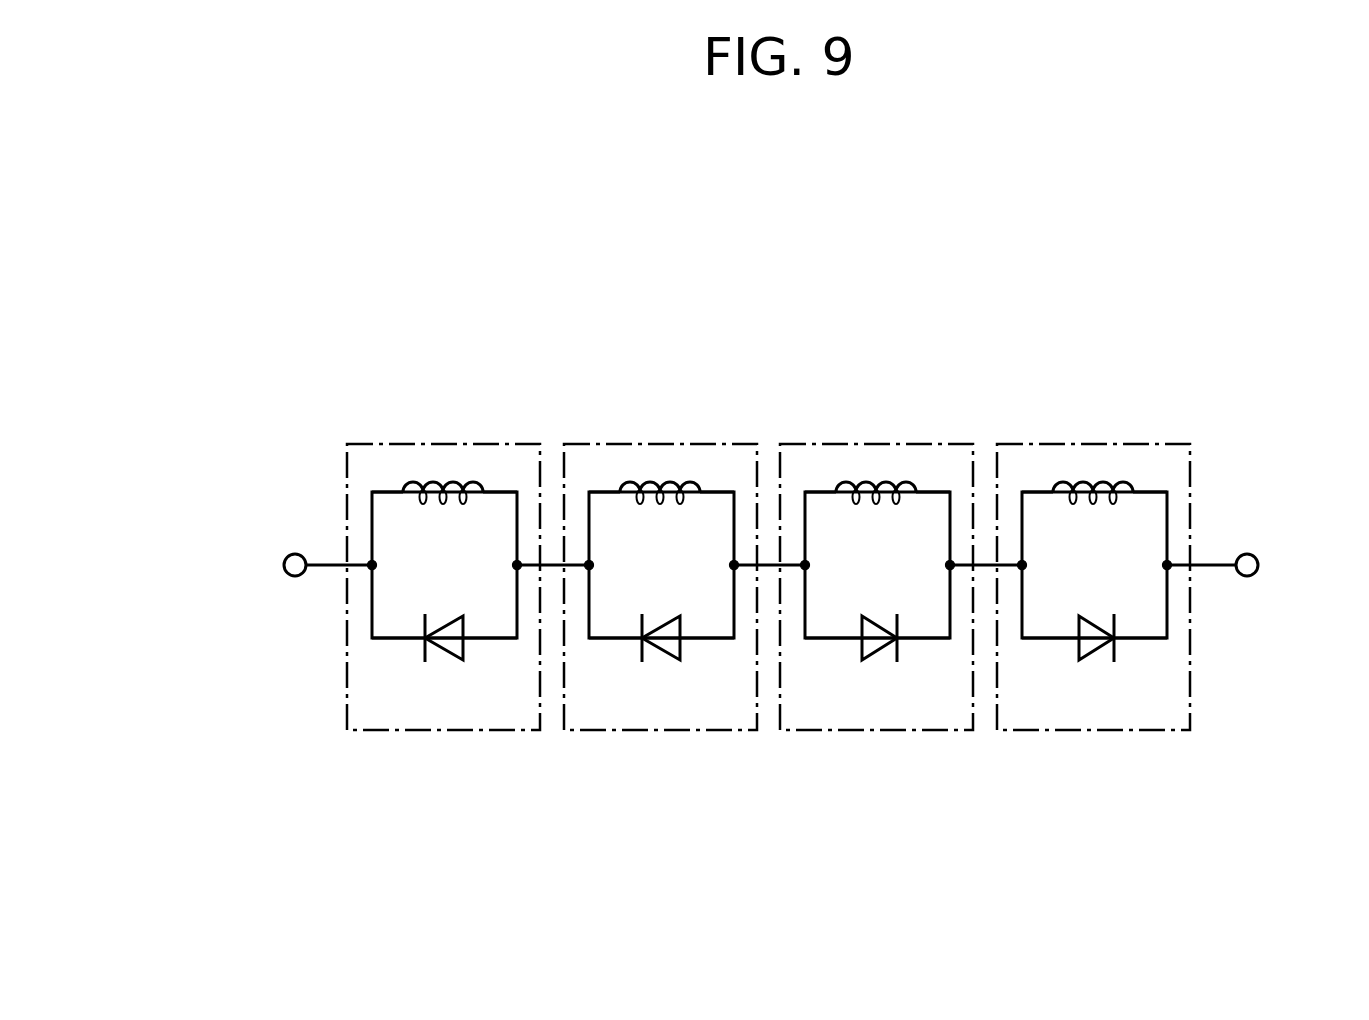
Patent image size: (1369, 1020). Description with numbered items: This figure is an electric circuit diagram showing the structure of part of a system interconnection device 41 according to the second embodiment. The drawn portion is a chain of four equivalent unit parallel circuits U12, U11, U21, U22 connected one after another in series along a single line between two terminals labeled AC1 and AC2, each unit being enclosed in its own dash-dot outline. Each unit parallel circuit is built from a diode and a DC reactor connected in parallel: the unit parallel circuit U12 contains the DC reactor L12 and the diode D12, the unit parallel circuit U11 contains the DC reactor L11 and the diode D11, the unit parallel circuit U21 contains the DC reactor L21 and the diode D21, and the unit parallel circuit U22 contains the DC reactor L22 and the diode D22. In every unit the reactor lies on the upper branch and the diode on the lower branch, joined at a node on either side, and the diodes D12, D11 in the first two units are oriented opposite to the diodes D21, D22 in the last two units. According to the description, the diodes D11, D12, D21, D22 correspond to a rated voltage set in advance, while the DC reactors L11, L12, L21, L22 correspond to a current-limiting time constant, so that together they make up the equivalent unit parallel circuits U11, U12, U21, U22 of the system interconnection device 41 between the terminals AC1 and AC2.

The system interconnection device 41 is at (283, 350).
The unit parallel circuit U12 is at (445, 444).
The unit parallel circuit U11 is at (666, 444).
The unit parallel circuit U21 is at (875, 444).
The unit parallel circuit U22 is at (1092, 444).
The DC reactor L12 is at (442, 502).
The DC reactor L11 is at (659, 502).
The DC reactor L21 is at (875, 502).
The DC reactor L22 is at (1092, 502).
The diode D12 is at (441, 648).
The diode D11 is at (672, 650).
The diode D21 is at (882, 652).
The diode D22 is at (1099, 652).
The AC terminal AC1 is at (284, 565).
The AC terminal AC2 is at (1247, 553).